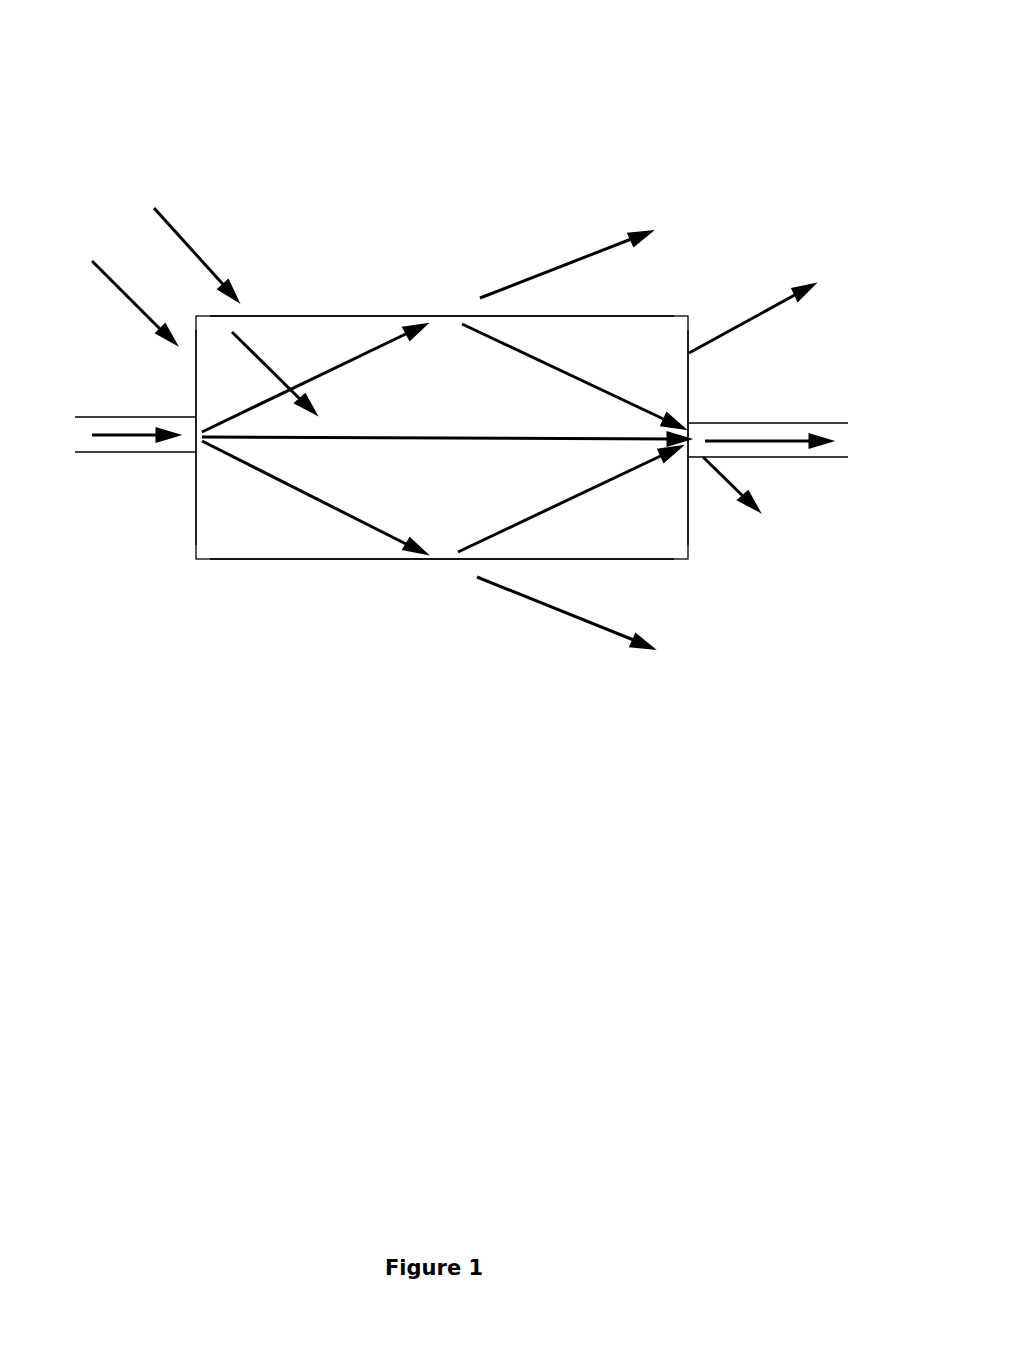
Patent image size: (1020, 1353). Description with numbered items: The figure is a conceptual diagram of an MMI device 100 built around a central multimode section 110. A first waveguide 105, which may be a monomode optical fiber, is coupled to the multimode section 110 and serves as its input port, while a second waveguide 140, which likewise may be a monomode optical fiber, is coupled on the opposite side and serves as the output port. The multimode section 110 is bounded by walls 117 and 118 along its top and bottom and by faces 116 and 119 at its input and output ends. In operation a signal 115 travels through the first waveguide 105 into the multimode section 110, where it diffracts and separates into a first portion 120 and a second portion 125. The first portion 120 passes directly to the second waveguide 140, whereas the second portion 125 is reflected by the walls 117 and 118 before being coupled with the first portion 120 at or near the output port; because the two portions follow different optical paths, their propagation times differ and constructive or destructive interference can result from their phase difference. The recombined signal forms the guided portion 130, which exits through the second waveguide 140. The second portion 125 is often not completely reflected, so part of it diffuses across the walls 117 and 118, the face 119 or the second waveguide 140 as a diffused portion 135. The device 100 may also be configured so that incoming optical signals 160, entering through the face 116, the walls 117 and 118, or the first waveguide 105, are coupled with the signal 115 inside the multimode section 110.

The MMI device 100 is at (460, 344).
The first waveguide 105 is at (120, 417).
The multimode section 110 is at (316, 315).
The signal 115 is at (125, 437).
The face 116 is at (196, 507).
The wall 117 is at (372, 316).
The wall 118 is at (317, 559).
The face 119 is at (688, 526).
The first portion 120 is at (405, 437).
The second portion 125 is at (363, 362).
The guided portion 130 is at (800, 445).
The diffused portion 135 is at (568, 262).
The second waveguide 140 is at (789, 422).
The incoming optical signals 160 is at (238, 345).